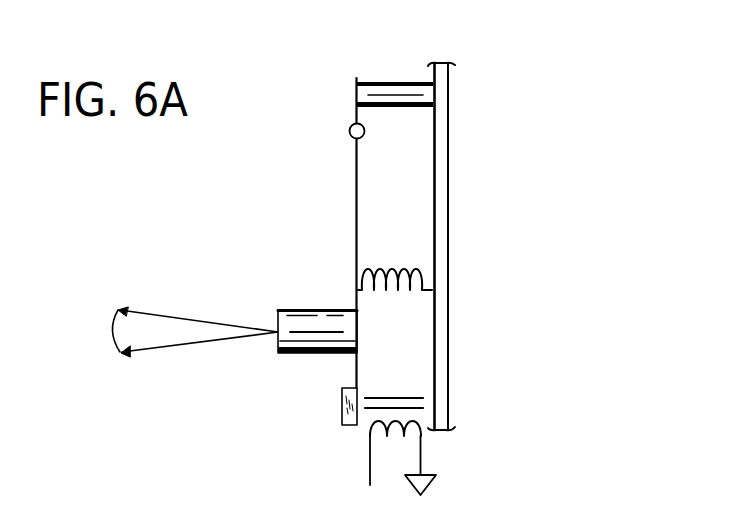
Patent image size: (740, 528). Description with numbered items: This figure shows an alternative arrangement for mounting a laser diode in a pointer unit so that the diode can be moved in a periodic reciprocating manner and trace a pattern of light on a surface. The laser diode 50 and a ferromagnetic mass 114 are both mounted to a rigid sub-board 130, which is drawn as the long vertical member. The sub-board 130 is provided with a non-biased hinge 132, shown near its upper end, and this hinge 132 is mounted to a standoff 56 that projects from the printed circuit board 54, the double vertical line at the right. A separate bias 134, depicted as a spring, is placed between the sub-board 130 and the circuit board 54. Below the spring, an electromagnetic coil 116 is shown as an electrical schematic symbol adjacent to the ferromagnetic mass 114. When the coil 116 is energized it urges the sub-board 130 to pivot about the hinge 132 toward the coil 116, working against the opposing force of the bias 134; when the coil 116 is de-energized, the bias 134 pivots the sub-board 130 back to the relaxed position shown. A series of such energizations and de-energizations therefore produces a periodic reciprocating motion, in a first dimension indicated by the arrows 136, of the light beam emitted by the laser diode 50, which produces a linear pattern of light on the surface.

The laser diode 50 is at (315, 308).
The printed circuit board 54 is at (441, 144).
The standoff 56 is at (400, 86).
The ferromagnetic mass 114 is at (340, 403).
The electromagnetic coil 116 is at (398, 397).
The rigid sub-board 130 is at (355, 172).
The non-biased hinge 132 is at (349, 128).
The bias 134 is at (408, 263).
The arrows 136 is at (132, 360).